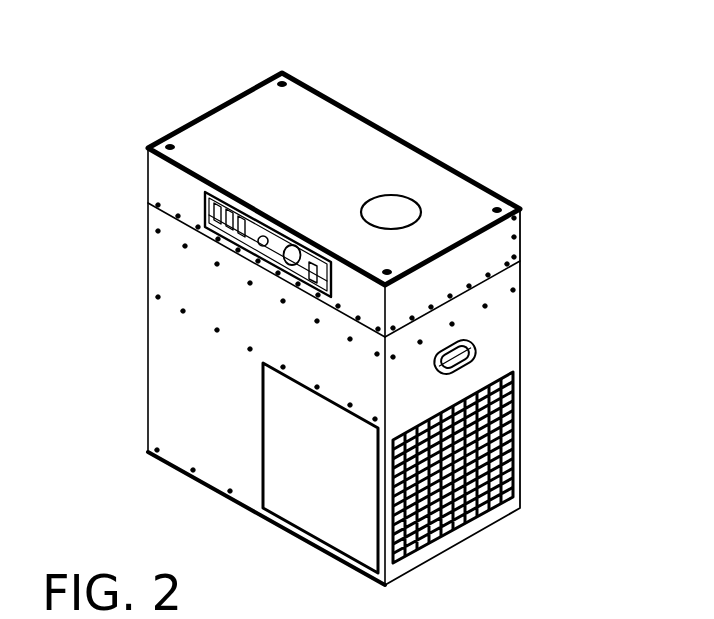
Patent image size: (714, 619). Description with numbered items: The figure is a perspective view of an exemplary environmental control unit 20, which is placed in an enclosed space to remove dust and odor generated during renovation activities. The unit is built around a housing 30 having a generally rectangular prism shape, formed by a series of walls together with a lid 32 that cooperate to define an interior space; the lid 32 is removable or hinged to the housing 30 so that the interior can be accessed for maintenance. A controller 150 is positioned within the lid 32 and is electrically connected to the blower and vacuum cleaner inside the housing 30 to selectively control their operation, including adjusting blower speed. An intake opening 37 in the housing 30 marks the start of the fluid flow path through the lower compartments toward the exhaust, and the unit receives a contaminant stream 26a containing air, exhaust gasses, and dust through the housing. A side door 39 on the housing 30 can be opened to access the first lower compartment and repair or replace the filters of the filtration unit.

The environmental control unit 20 is at (386, 92).
The lid 32 is at (167, 141).
The housing 30 is at (173, 263).
The controller 150 is at (260, 255).
The side door 39 is at (307, 503).
The intake opening 37 is at (440, 527).
The contaminant stream 26a is at (490, 543).